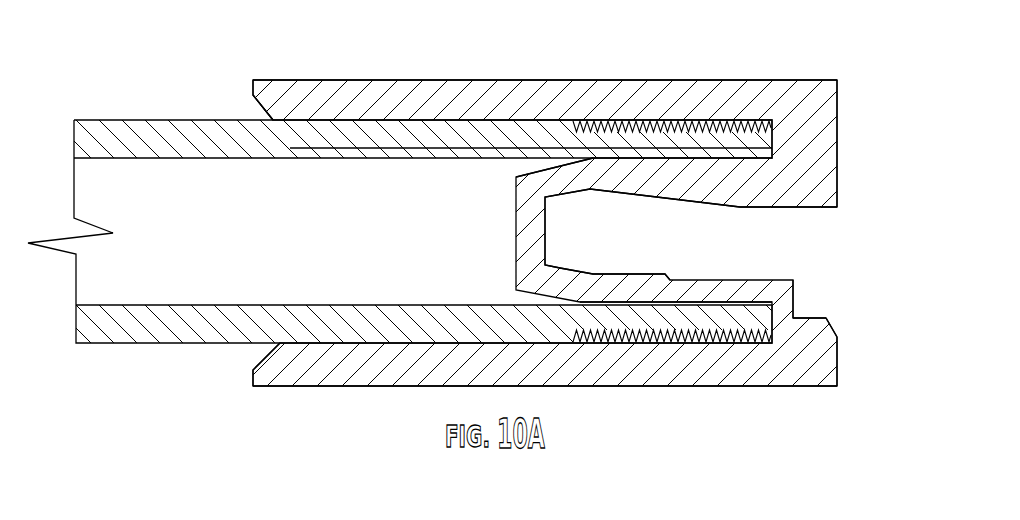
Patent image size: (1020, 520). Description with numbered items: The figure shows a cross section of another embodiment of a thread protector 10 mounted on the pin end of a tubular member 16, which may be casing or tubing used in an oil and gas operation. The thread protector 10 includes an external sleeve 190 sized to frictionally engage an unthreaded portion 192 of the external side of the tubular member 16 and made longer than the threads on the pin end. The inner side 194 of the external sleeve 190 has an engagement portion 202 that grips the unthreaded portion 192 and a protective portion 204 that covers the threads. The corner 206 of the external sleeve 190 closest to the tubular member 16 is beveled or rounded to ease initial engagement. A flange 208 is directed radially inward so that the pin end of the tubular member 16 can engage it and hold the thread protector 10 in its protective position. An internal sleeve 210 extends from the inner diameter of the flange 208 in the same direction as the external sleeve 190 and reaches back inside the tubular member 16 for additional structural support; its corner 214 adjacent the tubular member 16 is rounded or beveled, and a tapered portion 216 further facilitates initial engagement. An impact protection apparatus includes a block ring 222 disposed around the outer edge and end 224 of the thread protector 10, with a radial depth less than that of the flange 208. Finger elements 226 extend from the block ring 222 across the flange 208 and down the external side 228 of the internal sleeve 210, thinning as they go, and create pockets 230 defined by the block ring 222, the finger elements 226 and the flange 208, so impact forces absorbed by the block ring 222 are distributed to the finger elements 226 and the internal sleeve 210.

The thread protector 10 is at (146, 44).
The tubular member 16 is at (125, 120).
The external sleeve 190 is at (493, 80).
The unthreaded portion 192 is at (340, 363).
The inner side 194 is at (312, 120).
The engagement portion 202 is at (430, 148).
The protective portion 204 is at (659, 149).
The corner 206 is at (255, 358).
The flange 208 is at (838, 120).
The internal sleeve 210 is at (773, 280).
The corner 214 is at (544, 168).
The tapered portion 216 is at (540, 296).
The block ring 222 is at (812, 348).
The end 224 is at (838, 357).
The finger elements 226 is at (760, 208).
The external side 228 is at (607, 274).
The pockets 230 is at (794, 304).